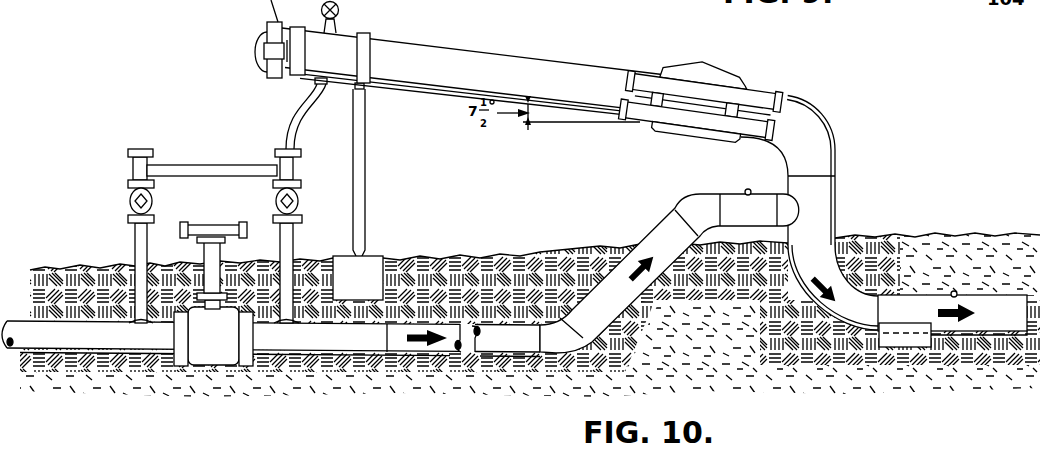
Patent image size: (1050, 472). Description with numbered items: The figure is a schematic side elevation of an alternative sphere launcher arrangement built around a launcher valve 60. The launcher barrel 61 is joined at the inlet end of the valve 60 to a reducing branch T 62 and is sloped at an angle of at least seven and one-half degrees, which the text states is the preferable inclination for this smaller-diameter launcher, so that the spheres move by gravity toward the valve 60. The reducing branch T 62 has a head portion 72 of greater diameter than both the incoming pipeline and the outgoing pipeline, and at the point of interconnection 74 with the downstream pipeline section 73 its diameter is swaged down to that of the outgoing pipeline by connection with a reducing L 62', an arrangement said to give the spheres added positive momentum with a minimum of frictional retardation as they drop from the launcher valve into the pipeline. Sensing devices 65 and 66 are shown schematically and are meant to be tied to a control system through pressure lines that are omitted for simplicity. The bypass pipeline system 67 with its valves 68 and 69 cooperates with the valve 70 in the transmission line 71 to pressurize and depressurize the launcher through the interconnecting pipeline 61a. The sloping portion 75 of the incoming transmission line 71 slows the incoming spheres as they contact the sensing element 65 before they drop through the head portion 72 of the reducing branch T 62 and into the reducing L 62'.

The valve 60 is at (700, 62).
The launcher barrel 61 is at (490, 53).
The interconnecting pipeline 61a is at (296, 125).
The reducing branch T 62 is at (816, 133).
The reducing L 62' is at (828, 318).
The sensing device 65 is at (746, 190).
The sensing device 66 is at (956, 291).
The bypass pipeline system 67 is at (134, 246).
The valve 68 is at (133, 200).
The valve 69 is at (278, 202).
The valve 70 is at (228, 348).
The transmission line 71 is at (132, 339).
The head portion 72 is at (839, 197).
The downstream pipeline section 73 is at (1003, 295).
The point of interconnection 74 is at (881, 293).
The sloping portion 75 is at (647, 300).